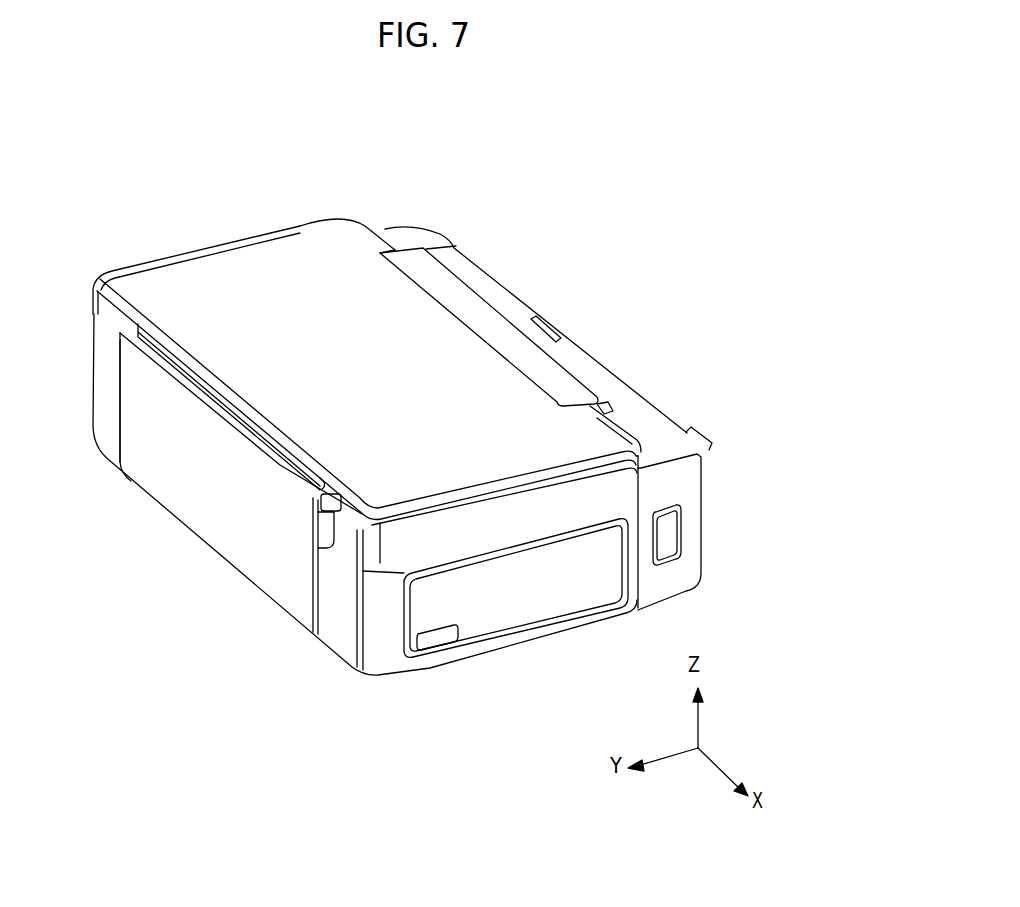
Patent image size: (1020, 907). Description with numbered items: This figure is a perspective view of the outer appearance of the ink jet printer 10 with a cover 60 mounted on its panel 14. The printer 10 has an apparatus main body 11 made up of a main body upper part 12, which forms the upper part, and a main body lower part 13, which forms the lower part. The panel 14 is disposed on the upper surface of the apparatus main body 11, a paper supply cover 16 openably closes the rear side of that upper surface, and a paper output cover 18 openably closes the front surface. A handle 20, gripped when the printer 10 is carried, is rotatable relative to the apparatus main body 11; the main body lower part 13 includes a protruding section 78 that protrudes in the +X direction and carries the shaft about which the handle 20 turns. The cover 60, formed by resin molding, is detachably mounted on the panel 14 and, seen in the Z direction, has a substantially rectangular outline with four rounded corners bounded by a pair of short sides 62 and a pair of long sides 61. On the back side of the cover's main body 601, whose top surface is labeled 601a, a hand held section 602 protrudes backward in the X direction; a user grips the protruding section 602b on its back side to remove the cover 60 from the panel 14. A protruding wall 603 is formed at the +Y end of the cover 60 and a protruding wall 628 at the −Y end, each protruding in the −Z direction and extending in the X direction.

The ink jet printer 10 is at (621, 211).
The apparatus main body 11 is at (365, 483).
The main body upper part 12 is at (652, 442).
The main body lower part 13 is at (338, 612).
The panel 14 is at (450, 520).
The paper supply cover 16 is at (510, 307).
The paper output cover 18 is at (193, 513).
The handle 20 is at (560, 633).
The cover 60 is at (376, 226).
The long side 61 is at (789, 448).
The short side 62 is at (345, 195).
The protruding section 78 is at (487, 630).
The main body 601 is at (362, 280).
The top surface 601a is at (366, 405).
The hand held section 602 is at (457, 300).
The protruding section 602b is at (557, 367).
The protruding wall 603 is at (600, 407).
The protruding wall 628 is at (215, 401).